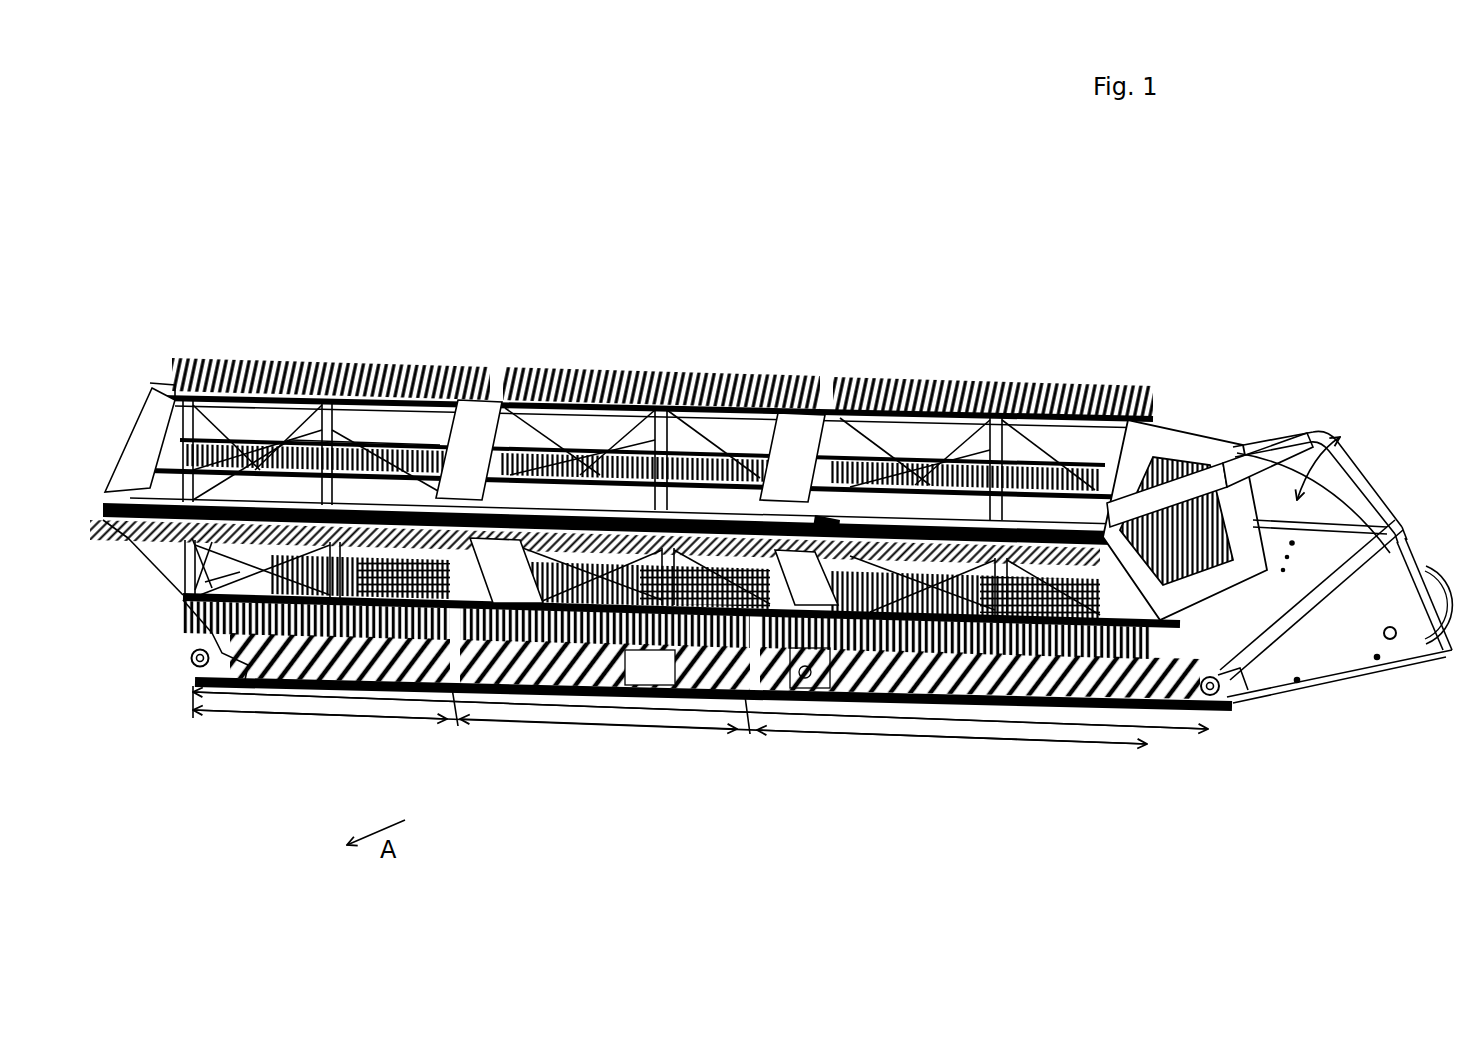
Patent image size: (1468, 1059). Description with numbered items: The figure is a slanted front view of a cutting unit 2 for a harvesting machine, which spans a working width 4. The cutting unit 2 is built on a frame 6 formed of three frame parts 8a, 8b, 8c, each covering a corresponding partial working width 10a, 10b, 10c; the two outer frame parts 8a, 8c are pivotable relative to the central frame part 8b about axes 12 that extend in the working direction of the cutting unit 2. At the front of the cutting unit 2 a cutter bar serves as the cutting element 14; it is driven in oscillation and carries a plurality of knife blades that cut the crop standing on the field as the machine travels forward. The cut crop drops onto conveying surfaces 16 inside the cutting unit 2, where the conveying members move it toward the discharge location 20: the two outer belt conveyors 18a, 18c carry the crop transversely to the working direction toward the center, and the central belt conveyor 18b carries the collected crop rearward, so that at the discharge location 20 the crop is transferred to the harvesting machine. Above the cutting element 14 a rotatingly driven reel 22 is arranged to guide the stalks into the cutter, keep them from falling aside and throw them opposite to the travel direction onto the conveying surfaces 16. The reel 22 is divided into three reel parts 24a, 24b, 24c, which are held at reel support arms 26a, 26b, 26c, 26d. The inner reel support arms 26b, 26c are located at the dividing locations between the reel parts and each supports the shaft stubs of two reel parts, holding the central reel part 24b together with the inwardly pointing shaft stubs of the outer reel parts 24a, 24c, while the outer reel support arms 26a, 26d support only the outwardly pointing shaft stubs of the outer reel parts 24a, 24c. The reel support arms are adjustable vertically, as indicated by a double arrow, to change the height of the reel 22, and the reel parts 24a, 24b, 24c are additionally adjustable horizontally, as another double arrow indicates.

The cutting unit 2 is at (830, 240).
The working width 4 is at (1175, 730).
The frame 6 is at (1433, 643).
The frame part 8a is at (371, 316).
The frame part 8b is at (716, 336).
The frame part 8c is at (1093, 329).
The partial working width 10a is at (280, 713).
The partial working width 10b is at (623, 723).
The partial working width 10c is at (970, 735).
The axes 12 is at (477, 697).
The cutting element 14 is at (1045, 708).
The conveying surfaces 16 is at (1262, 636).
The belt conveyor 18a is at (410, 690).
The belt conveyor 18b is at (770, 703).
The belt conveyor 18c is at (1005, 683).
The discharge location 20 is at (890, 372).
The reel 22 is at (577, 329).
The reel part 24a is at (367, 493).
The reel part 24b is at (727, 503).
The reel part 24c is at (1057, 513).
The reel support arm 26a is at (188, 372).
The reel support arm 26b is at (475, 395).
The reel support arm 26c is at (834, 410).
The reel support arm 26d is at (1255, 470).